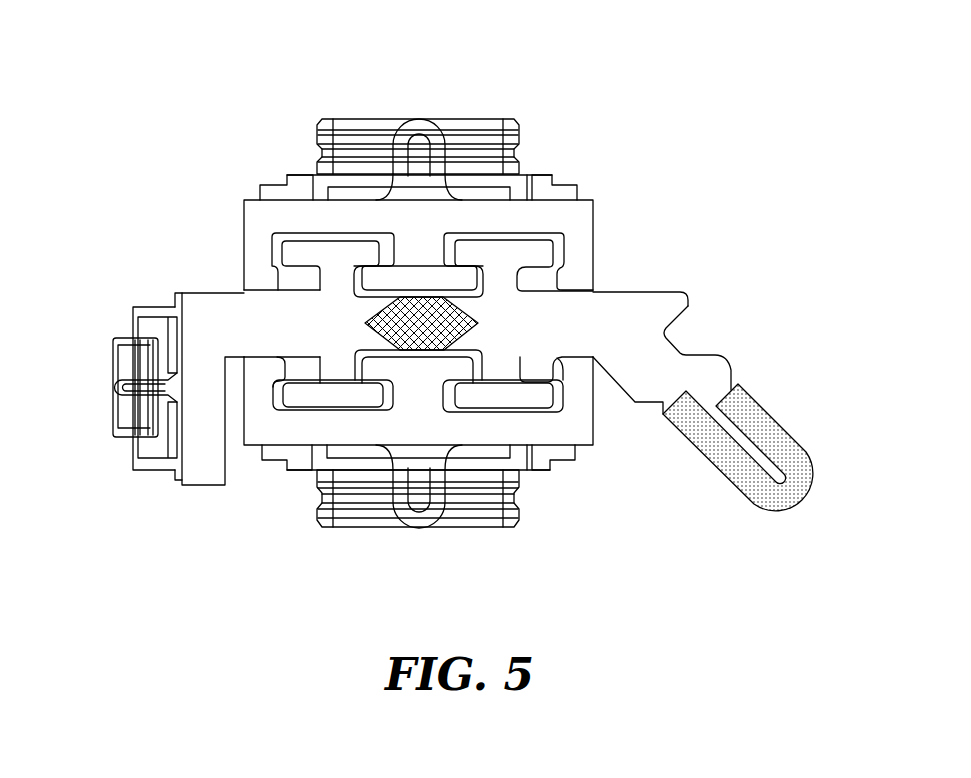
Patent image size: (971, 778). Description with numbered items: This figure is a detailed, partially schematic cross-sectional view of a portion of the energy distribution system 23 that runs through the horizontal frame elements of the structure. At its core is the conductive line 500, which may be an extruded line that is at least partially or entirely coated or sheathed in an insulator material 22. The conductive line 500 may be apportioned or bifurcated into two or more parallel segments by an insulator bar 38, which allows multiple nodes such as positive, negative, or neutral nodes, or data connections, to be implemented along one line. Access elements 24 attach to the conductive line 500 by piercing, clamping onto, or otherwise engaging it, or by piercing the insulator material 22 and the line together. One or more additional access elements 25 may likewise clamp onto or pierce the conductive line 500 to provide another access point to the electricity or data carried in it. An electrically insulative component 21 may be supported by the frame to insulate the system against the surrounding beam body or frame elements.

The electrically insulative component 21 is at (820, 480).
The insulator material 22 is at (636, 291).
The energy distribution system 23 is at (261, 66).
The access elements 24 is at (243, 215).
The additional access elements 25 is at (108, 346).
The insulator bar 38 is at (365, 323).
The conductive line 500 is at (630, 320).